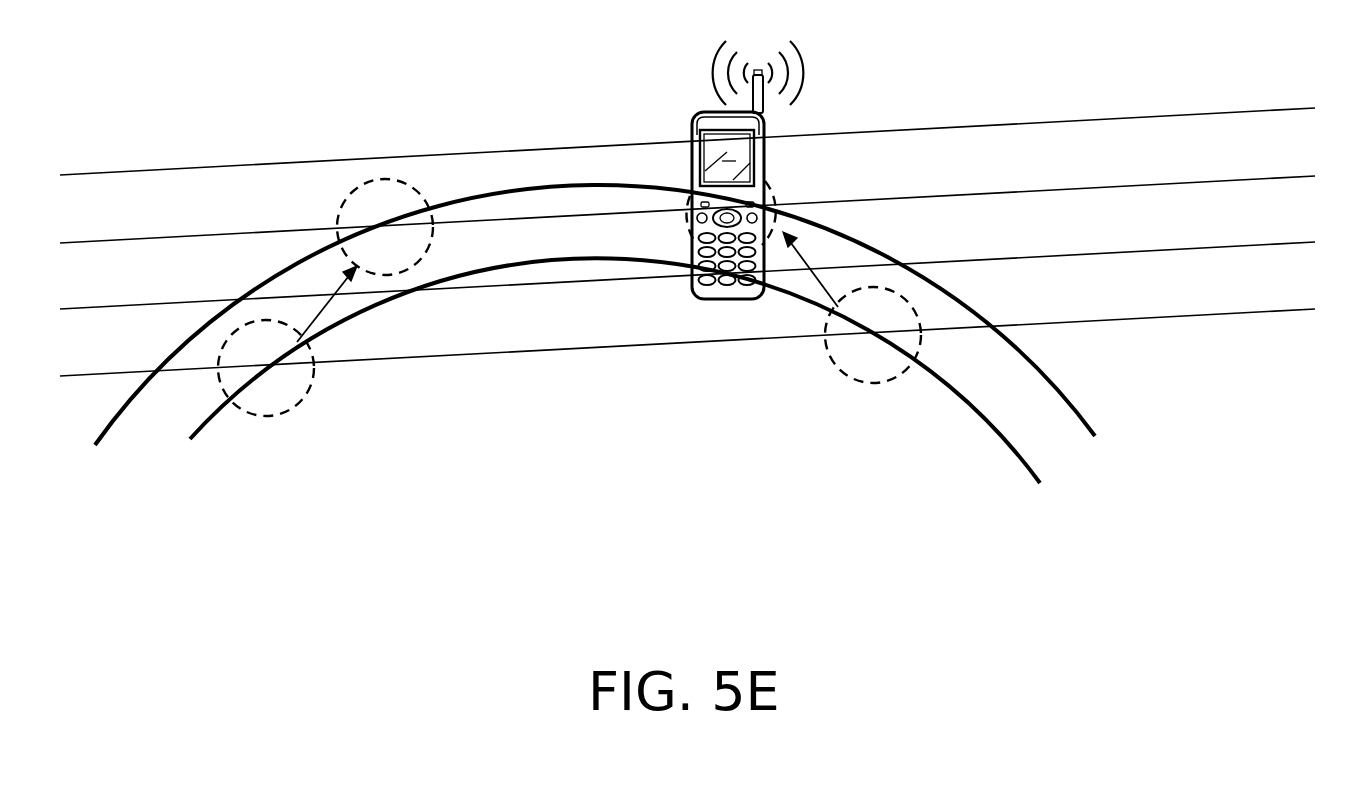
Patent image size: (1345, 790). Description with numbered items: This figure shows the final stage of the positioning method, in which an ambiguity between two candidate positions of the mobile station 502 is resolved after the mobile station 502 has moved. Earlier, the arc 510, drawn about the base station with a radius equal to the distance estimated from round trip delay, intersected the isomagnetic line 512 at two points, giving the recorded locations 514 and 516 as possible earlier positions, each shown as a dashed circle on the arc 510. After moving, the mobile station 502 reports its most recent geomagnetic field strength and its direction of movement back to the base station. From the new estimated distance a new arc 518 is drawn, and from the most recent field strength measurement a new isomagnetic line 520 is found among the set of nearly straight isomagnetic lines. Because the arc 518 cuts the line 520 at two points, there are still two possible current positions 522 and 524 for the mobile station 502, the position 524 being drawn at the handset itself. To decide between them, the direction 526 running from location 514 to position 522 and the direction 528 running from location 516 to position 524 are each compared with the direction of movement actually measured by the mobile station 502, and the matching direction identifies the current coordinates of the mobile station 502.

The mobile station 502 is at (690, 117).
The arc 510 is at (1000, 432).
The isomagnetic line 512 is at (1068, 279).
The location 514 is at (298, 403).
The location 516 is at (846, 378).
The new arc 518 is at (1050, 378).
The new isomagnetic line 520 is at (968, 207).
The possible position 522 is at (357, 185).
The possible position 524 is at (775, 195).
The direction 526 is at (320, 302).
The direction 528 is at (808, 252).